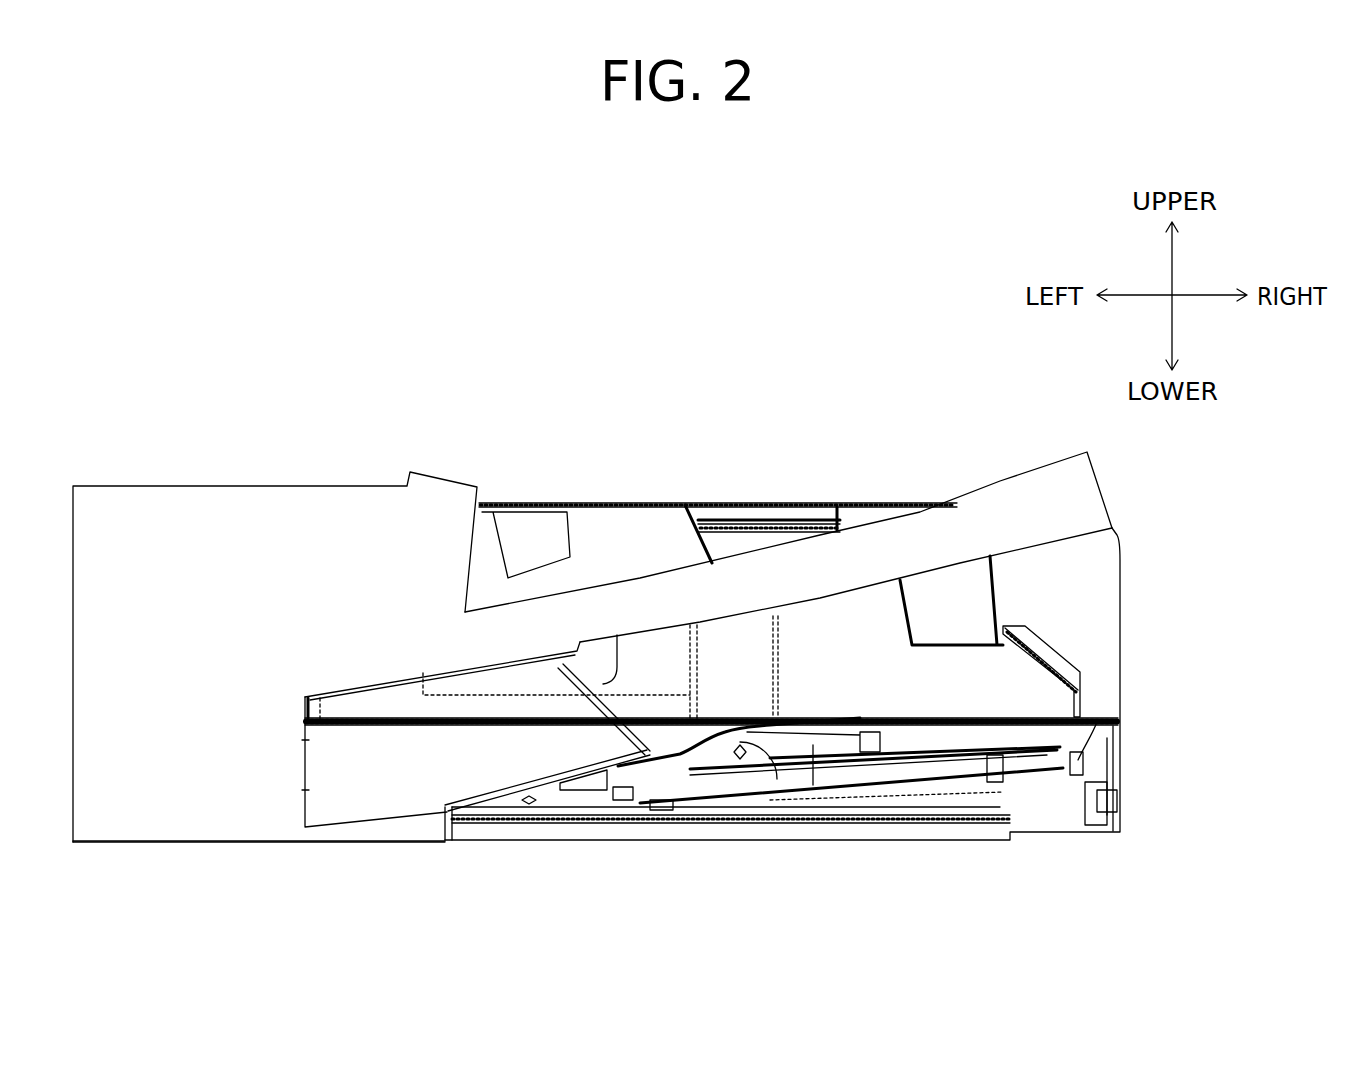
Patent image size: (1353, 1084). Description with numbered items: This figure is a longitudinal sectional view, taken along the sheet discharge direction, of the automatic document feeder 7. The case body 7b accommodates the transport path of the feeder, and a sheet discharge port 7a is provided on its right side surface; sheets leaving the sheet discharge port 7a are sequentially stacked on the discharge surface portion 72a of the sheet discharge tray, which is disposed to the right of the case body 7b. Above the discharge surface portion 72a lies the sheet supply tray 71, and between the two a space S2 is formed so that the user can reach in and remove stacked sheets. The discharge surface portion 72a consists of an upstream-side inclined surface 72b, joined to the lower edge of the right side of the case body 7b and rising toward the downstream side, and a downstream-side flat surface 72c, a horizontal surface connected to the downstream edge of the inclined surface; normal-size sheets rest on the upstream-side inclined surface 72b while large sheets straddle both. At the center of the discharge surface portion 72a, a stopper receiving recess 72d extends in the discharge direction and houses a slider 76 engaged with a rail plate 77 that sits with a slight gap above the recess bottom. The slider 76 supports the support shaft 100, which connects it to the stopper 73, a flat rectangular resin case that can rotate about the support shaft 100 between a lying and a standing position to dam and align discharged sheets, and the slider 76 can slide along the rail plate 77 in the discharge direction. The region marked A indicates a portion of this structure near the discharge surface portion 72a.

The automatic document feeder 7 is at (169, 469).
The sheet discharge port 7a is at (305, 765).
The case body 7b is at (227, 815).
The sheet supply tray 71 is at (970, 528).
The discharge surface portion 72a is at (890, 668).
The upstream-side inclined surface 72b is at (753, 729).
The downstream-side flat surface 72c is at (858, 718).
The stopper receiving recess 72d is at (938, 737).
The stopper 73 is at (790, 748).
The slider 76 is at (697, 771).
The rail plate 77 is at (855, 740).
The support shaft 100 is at (738, 760).
The region A is at (1001, 698).
The space S2 is at (442, 766).